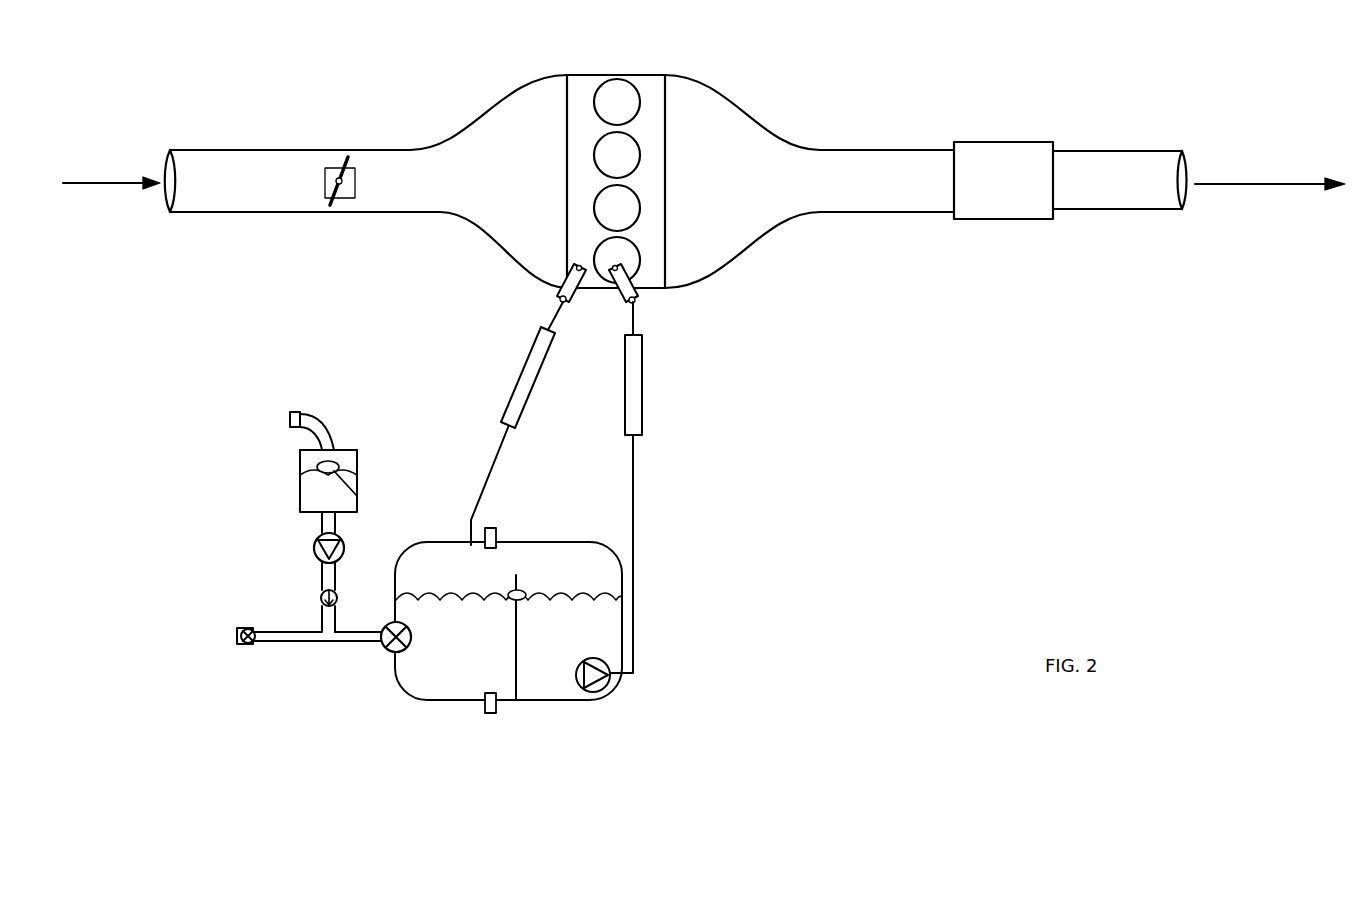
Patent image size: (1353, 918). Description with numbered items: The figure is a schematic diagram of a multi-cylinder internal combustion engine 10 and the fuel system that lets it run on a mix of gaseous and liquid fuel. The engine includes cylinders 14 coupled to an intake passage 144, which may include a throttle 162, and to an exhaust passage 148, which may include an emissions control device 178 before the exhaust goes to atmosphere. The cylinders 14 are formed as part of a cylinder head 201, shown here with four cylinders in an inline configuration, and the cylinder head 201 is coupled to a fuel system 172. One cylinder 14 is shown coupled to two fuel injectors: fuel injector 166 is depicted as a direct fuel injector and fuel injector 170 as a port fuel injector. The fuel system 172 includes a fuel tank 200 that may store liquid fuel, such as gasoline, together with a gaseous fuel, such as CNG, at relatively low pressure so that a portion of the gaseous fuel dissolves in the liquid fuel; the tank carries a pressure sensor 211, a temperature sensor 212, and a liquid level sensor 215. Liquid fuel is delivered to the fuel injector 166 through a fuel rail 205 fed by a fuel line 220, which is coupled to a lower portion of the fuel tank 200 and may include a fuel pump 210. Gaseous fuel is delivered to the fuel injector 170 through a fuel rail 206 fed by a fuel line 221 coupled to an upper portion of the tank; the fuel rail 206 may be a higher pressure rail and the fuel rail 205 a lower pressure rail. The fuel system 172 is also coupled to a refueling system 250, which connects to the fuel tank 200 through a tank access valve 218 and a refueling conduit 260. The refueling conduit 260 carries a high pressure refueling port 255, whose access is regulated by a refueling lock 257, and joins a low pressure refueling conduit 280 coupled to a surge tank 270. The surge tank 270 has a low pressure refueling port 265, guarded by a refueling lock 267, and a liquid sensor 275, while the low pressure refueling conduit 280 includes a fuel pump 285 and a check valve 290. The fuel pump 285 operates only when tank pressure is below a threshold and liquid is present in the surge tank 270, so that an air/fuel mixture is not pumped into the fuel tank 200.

The internal combustion engine 10 is at (787, 42).
The cylinders 14 is at (637, 250).
The intake passage 144 is at (305, 194).
The exhaust passage 148 is at (762, 194).
The throttle 162 is at (362, 179).
The fuel injector 166 is at (636, 293).
The fuel injector 170 is at (548, 292).
The fuel system 172 is at (390, 363).
The emissions control device 178 is at (1021, 192).
The fuel tank 200 is at (403, 688).
The cylinder head 201 is at (665, 163).
The fuel rail 205 is at (624, 428).
The fuel rail 206 is at (506, 408).
The fuel pump 210 is at (585, 692).
The pressure sensor 211 is at (497, 530).
The temperature sensor 212 is at (483, 708).
The liquid level sensor 215 is at (521, 578).
The tank access valve 218 is at (386, 650).
The fuel line 220 is at (633, 489).
The fuel line 221 is at (483, 486).
The refueling system 250 is at (278, 400).
The high pressure refueling port 255 is at (252, 630).
The refueling lock 257 is at (240, 645).
The refueling conduit 260 is at (297, 645).
The low pressure refueling port 265 is at (300, 416).
The refueling lock 267 is at (290, 428).
The surge tank 270 is at (300, 500).
The liquid sensor 275 is at (357, 490).
The low pressure refueling conduit 280 is at (321, 572).
The fuel pump 285 is at (344, 546).
The check valve 290 is at (340, 595).